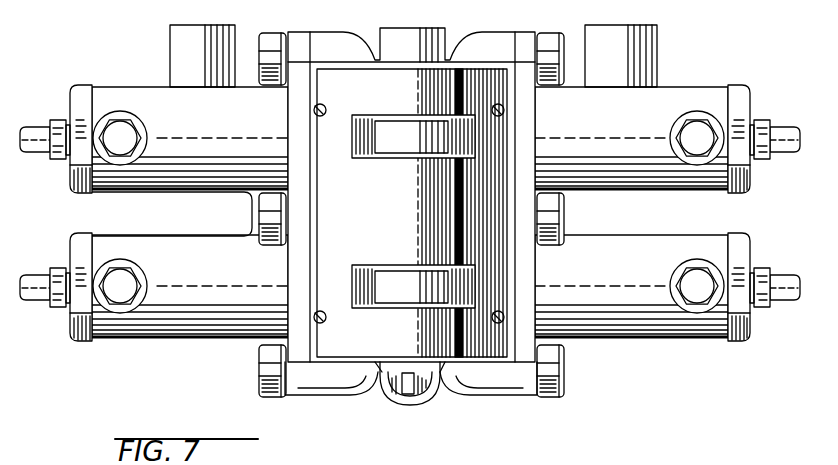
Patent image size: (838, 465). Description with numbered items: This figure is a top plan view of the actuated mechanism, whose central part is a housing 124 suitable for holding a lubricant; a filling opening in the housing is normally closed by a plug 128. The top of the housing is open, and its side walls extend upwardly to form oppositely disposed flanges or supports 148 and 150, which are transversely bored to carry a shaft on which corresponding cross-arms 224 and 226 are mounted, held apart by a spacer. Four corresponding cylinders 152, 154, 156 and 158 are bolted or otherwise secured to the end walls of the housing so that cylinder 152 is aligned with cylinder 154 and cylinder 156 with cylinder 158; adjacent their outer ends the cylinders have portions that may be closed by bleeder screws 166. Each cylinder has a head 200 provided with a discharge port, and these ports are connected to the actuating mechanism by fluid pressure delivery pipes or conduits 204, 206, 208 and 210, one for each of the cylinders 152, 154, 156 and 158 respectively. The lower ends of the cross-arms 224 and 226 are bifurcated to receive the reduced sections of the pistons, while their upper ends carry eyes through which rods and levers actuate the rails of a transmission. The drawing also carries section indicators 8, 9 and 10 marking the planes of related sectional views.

The housing 124 is at (497, 360).
The plug 128 is at (405, 394).
The flange or support 148 is at (345, 362).
The flange or support 150 is at (497, 70).
The cylinder 152 is at (165, 338).
The cylinder 154 is at (628, 338).
The cylinder 156 is at (137, 92).
The cylinder 158 is at (677, 97).
The bleeder screw 166 is at (120, 128).
The head 200 is at (80, 193).
The fluid pressure delivery pipe or conduit 204 is at (25, 301).
The fluid pressure delivery pipe or conduit 206 is at (783, 305).
The fluid pressure delivery pipe or conduit 208 is at (25, 153).
The fluid pressure delivery pipe or conduit 210 is at (783, 160).
The cross-arm 224 is at (386, 280).
The cross-arm 226 is at (394, 147).
The section line 8- 8 is at (35, 315).
The section line 9- 9 is at (35, 178).
The section line 10- 10 is at (388, 12).